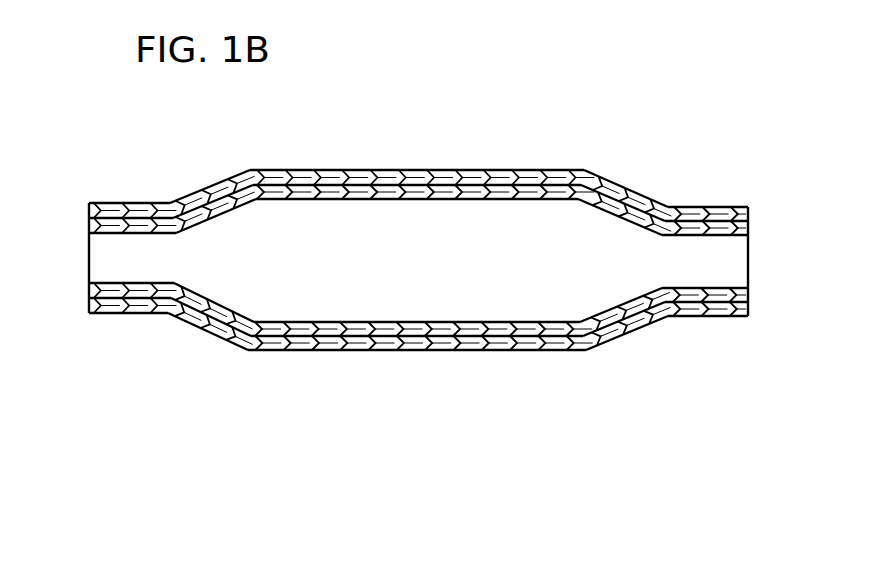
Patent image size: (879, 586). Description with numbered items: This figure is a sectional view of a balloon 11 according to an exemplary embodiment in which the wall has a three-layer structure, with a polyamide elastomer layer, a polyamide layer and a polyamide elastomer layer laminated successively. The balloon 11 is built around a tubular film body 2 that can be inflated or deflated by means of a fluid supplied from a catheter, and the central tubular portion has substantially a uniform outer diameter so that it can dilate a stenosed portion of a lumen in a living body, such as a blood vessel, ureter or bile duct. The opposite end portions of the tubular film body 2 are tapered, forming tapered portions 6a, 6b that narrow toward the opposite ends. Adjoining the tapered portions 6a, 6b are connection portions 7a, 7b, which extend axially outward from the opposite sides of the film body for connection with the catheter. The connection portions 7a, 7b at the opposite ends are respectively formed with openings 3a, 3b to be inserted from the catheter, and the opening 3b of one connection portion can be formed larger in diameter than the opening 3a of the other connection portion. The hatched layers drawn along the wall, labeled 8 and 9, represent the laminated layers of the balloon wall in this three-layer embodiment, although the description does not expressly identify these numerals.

The balloon 11 is at (72, 88).
The tubular film body 2 is at (165, 464).
The opening 3a is at (88, 268).
The opening 3b is at (745, 270).
The tapered portion 6a is at (165, 399).
The tapered portion 6b is at (582, 400).
The connection portion 7a is at (99, 212).
The connection portion 7b is at (720, 220).
The reinforcing layer 8 is at (352, 170).
The intermediate layer 9 is at (538, 186).